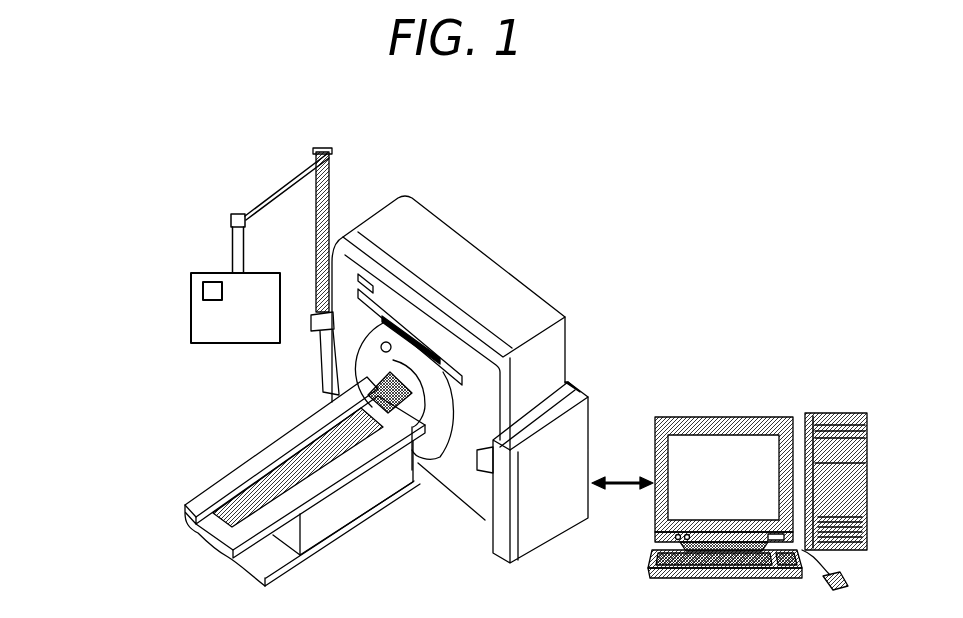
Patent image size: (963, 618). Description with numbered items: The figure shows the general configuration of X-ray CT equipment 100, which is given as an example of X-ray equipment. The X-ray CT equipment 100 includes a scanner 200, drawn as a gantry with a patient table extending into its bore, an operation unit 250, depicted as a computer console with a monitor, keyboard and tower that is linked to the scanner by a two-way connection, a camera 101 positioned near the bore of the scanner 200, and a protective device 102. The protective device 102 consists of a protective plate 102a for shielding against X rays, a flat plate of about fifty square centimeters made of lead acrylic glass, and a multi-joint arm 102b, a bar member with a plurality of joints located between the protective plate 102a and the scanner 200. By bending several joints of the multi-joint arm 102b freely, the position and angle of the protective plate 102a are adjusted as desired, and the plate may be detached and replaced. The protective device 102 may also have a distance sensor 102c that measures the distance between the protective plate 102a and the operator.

The X-ray CT equipment 100 is at (714, 216).
The camera 101 is at (381, 348).
The protective device 102 is at (82, 192).
The protective plate 102a is at (192, 317).
The multi-joint arm 102b is at (230, 249).
The distance sensor 102c is at (205, 287).
The scanner 200 is at (492, 257).
The operation unit 250 is at (785, 403).